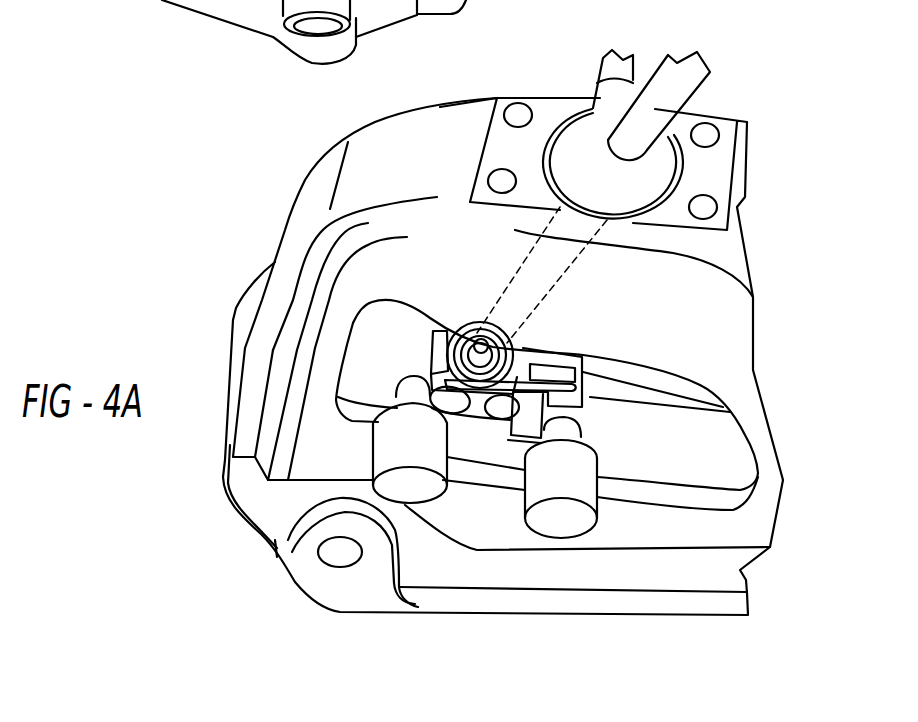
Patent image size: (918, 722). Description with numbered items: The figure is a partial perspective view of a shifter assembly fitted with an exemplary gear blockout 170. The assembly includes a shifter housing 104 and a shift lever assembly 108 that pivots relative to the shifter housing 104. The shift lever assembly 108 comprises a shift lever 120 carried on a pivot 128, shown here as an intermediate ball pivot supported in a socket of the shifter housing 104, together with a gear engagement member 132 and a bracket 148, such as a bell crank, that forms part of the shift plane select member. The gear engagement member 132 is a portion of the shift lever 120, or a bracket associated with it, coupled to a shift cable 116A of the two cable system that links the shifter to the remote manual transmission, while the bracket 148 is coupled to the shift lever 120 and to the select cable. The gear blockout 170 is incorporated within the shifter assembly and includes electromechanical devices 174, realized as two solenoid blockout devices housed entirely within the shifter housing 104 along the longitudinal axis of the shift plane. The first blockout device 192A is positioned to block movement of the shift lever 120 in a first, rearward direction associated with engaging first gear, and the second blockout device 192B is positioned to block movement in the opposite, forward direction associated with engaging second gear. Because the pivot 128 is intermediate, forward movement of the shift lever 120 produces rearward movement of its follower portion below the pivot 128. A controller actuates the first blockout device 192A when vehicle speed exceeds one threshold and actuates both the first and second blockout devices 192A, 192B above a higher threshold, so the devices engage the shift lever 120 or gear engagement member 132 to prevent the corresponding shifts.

The shifter housing 104 is at (302, 212).
The shift lever assembly 108 is at (565, 109).
The shift cable 116A is at (662, 397).
The shift lever 120 is at (687, 83).
The pivot 128 is at (643, 173).
The gear engagement member 132 is at (420, 352).
The bracket 148 is at (254, 32).
The gear blockout 170 is at (483, 575).
The electromechanical device 174 is at (365, 435).
The first blockout device 192A is at (400, 453).
The second blockout device 192B is at (583, 478).